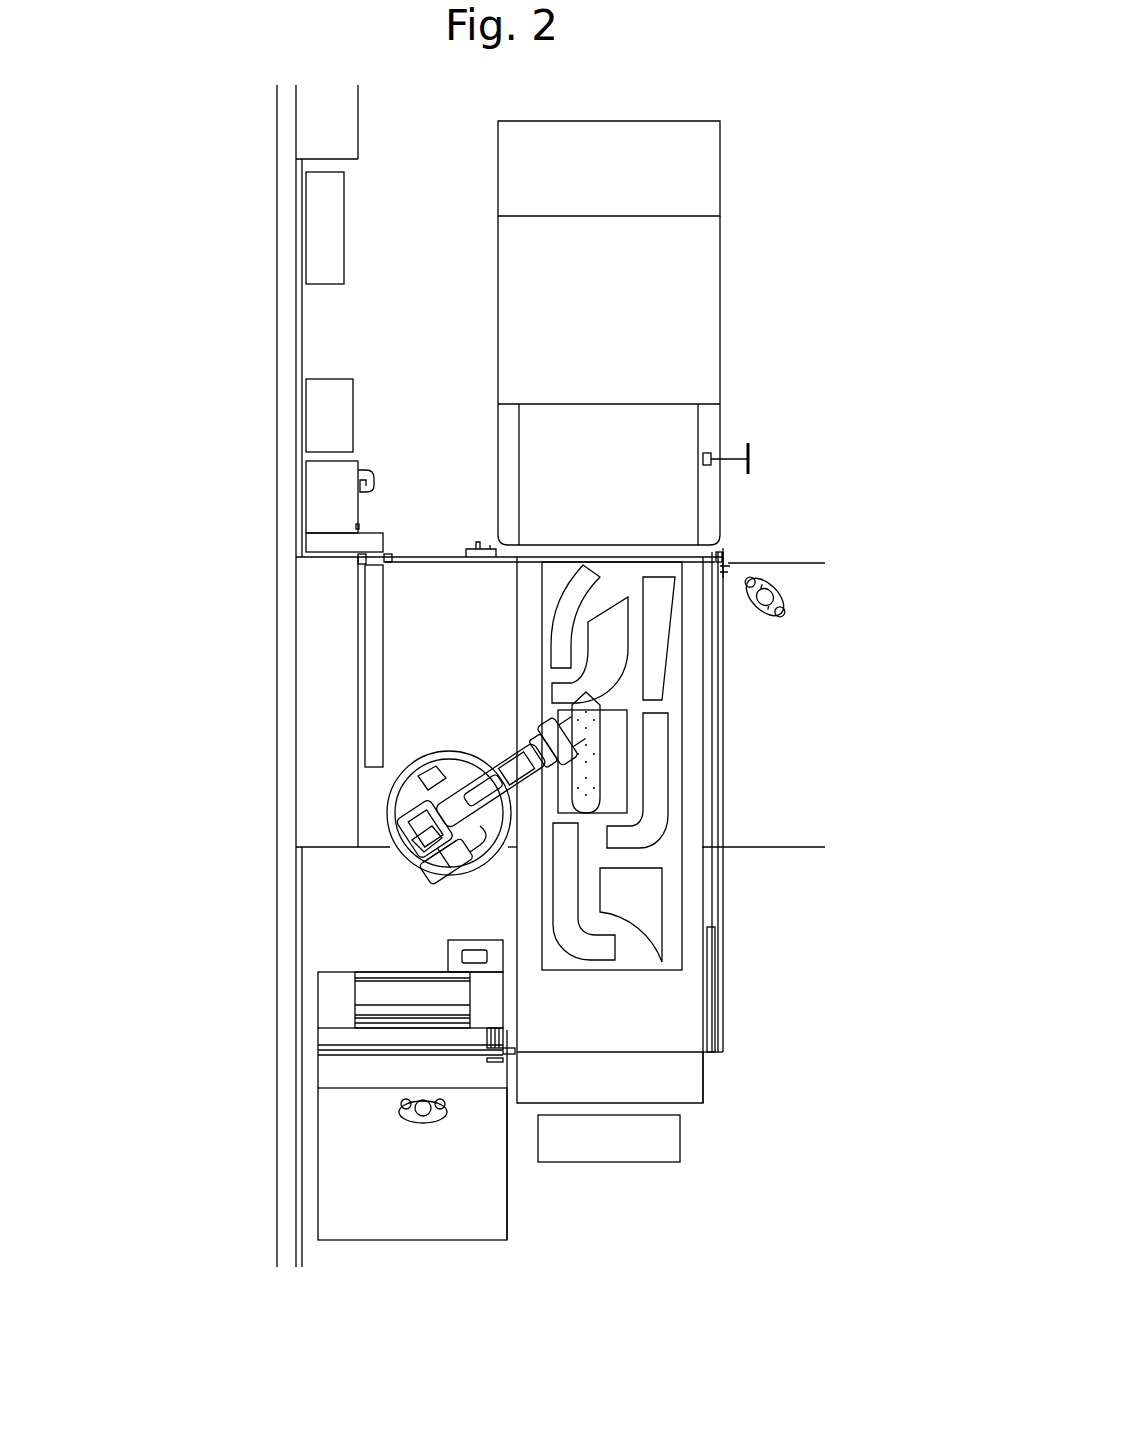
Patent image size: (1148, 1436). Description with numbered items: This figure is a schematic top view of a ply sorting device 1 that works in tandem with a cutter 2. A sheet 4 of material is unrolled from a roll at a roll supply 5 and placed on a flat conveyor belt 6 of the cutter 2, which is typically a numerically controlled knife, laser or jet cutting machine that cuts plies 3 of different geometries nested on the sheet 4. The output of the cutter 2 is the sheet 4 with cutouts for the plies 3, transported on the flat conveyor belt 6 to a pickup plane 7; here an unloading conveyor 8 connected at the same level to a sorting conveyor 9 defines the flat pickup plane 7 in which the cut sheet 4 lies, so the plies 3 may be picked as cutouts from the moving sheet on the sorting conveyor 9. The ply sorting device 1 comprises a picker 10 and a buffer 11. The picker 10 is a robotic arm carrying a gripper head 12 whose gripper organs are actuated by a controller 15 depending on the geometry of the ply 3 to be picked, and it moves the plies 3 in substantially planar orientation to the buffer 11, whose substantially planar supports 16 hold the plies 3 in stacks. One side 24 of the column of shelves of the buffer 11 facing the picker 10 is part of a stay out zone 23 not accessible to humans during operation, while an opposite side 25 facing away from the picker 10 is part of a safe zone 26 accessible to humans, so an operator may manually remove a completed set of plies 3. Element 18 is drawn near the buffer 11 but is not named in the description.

The ply sorting device 1 is at (767, 1050).
The cutter 2 is at (618, 325).
The plies 3 is at (640, 896).
The sheet 4 is at (682, 955).
The roll supply 5 is at (618, 185).
The flat conveyor belt 6 is at (700, 516).
The pickup plane 7 is at (693, 1100).
The unloading conveyor 8 is at (618, 485).
The sorting conveyor 9 is at (616, 1027).
The picker 10 is at (400, 802).
The buffer 11 is at (318, 1000).
The gripper head 12 is at (593, 787).
The controller 15 is at (348, 505).
The planar supports 16 is at (392, 1043).
The roller unit 18 is at (370, 972).
The stay out zone 23 is at (462, 663).
The side of the column of shelves 24 is at (400, 950).
The opposite side of the column 25 is at (490, 1085).
The safe zone 26 is at (418, 1193).